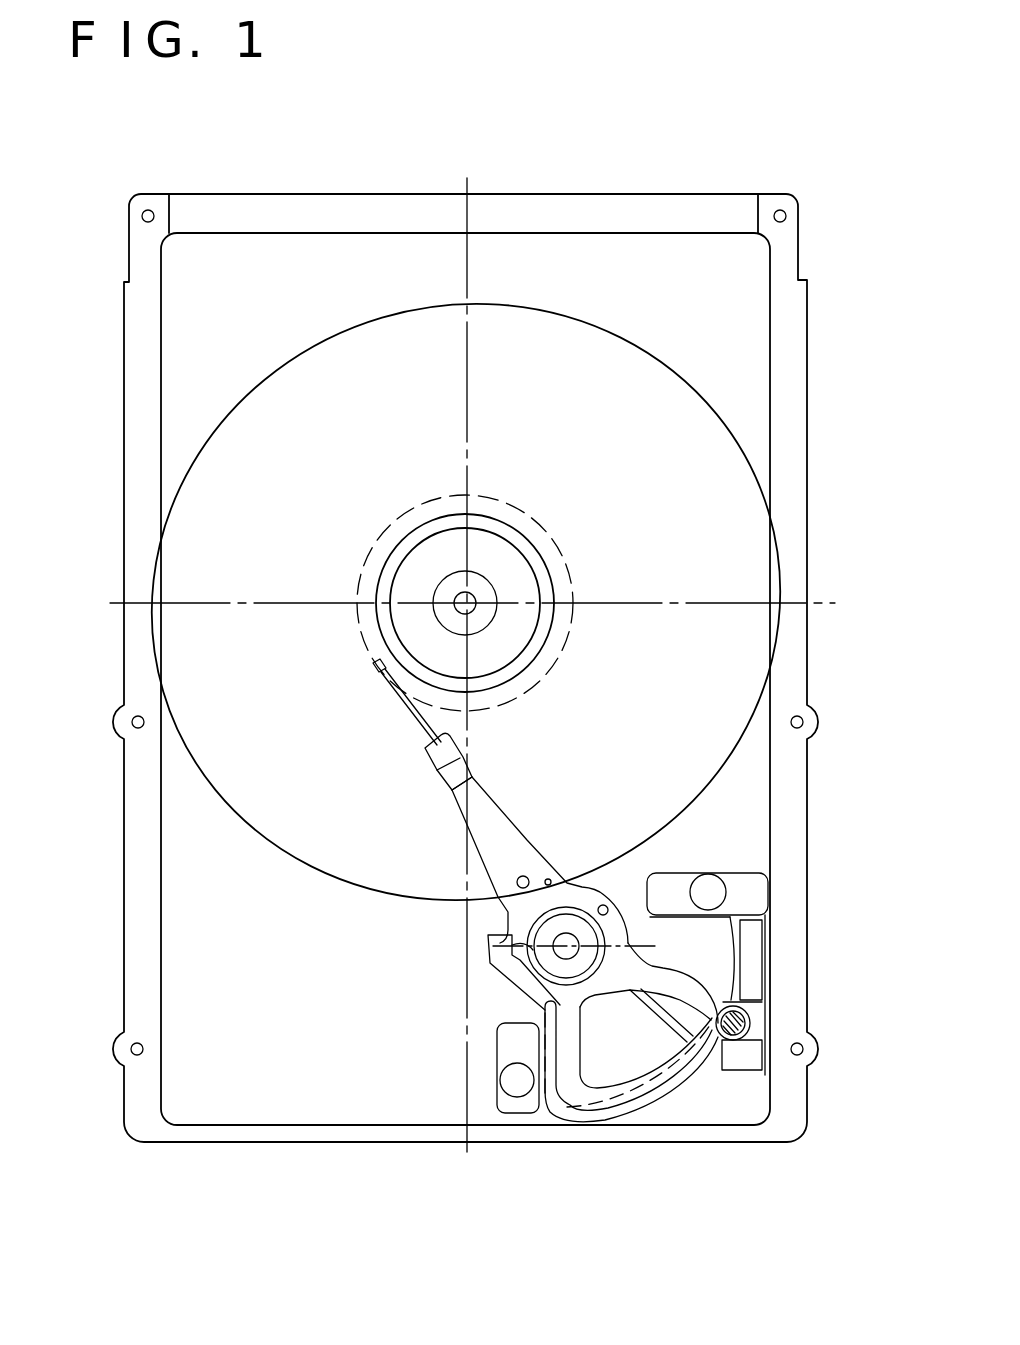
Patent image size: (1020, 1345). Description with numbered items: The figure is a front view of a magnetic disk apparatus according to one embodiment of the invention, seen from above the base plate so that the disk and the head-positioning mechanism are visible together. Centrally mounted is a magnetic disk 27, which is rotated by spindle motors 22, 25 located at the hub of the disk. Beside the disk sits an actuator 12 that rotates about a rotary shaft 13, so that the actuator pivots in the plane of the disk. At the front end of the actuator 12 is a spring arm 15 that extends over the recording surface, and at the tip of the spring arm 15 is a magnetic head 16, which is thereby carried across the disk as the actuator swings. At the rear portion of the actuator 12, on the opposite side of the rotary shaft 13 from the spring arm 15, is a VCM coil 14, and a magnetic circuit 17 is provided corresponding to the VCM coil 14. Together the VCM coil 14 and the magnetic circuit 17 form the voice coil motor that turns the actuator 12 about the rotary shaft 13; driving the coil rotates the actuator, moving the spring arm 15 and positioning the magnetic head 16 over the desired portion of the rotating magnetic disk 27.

The actuator 12 is at (660, 965).
The rotary shaft 13 is at (558, 957).
The VCM coil 14 is at (570, 1085).
The spring arm 15 is at (398, 699).
The magnetic head 16 is at (373, 666).
The magnetic circuit 17 is at (633, 1043).
The spindle motor 22 is at (487, 597).
The spindle motor 25 is at (403, 597).
The magnetic disk 27 is at (728, 480).